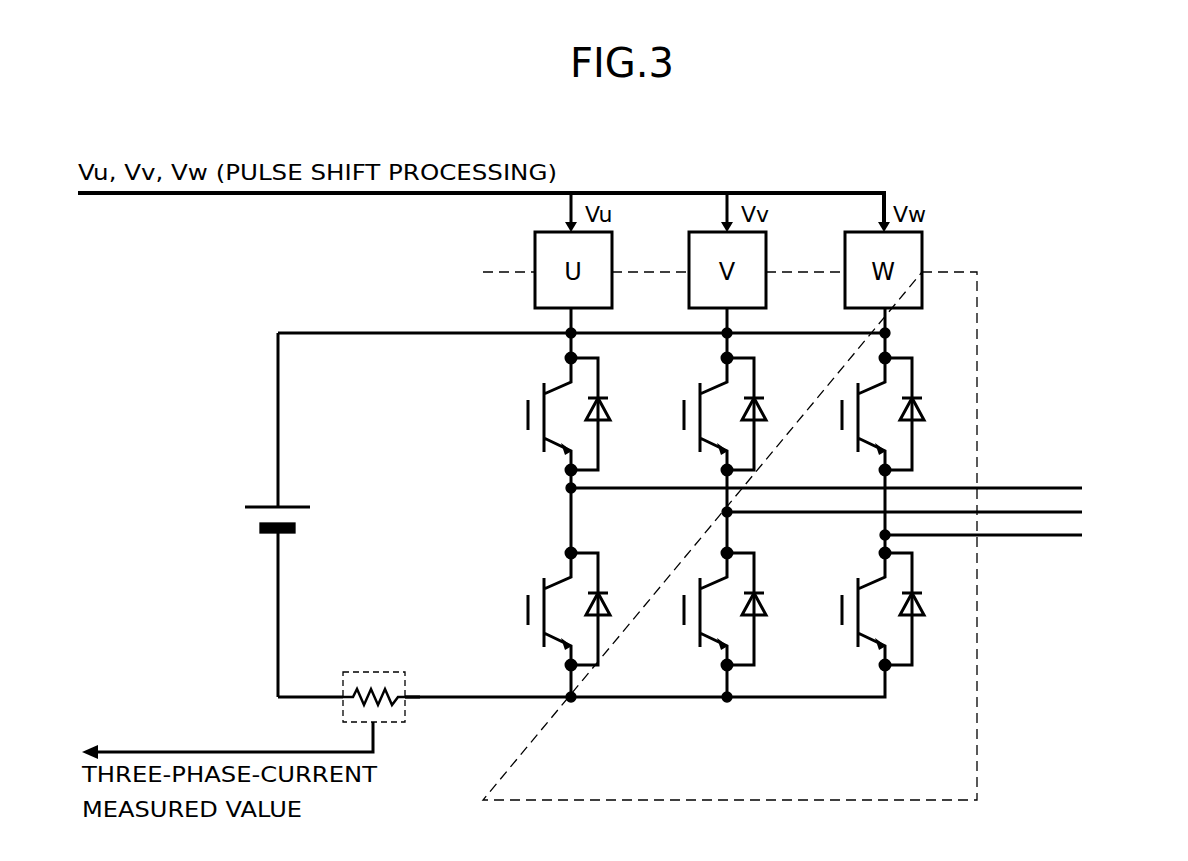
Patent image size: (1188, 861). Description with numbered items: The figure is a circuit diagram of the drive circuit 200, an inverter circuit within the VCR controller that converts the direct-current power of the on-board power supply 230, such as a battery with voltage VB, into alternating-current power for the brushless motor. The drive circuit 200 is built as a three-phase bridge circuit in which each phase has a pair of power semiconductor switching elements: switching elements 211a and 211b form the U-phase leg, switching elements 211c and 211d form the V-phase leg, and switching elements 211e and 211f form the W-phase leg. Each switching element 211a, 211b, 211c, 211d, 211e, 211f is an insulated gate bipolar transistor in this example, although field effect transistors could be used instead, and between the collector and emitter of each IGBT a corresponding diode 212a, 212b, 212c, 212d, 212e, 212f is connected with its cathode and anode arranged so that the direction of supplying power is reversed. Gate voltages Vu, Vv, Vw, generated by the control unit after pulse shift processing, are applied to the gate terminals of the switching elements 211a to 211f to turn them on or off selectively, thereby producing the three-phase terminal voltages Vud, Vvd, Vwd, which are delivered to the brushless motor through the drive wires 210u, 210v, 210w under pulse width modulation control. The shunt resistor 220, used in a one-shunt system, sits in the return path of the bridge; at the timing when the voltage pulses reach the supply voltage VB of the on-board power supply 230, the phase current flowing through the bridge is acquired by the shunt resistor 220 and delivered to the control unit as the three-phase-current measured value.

The drive circuit 200 is at (980, 272).
The drive wire 210u is at (1000, 488).
The drive wire 210v is at (1035, 512).
The drive wire 210w is at (1030, 540).
The switching element 211a is at (518, 412).
The switching element 211b is at (518, 607).
The switching element 211c is at (673, 412).
The switching element 211d is at (673, 607).
The switching element 211e is at (831, 412).
The switching element 211f is at (831, 607).
The diode 212a is at (612, 415).
The diode 212b is at (612, 610).
The diode 212c is at (768, 415).
The diode 212d is at (768, 610).
The diode 212e is at (926, 415).
The diode 212f is at (926, 610).
The shunt resistor 220 is at (372, 672).
The on-board power supply 230 is at (248, 504).